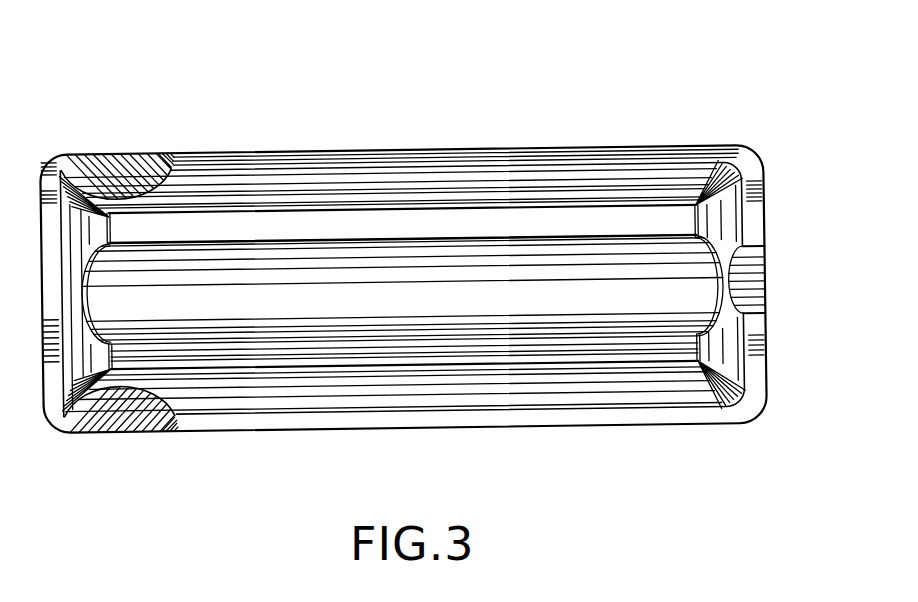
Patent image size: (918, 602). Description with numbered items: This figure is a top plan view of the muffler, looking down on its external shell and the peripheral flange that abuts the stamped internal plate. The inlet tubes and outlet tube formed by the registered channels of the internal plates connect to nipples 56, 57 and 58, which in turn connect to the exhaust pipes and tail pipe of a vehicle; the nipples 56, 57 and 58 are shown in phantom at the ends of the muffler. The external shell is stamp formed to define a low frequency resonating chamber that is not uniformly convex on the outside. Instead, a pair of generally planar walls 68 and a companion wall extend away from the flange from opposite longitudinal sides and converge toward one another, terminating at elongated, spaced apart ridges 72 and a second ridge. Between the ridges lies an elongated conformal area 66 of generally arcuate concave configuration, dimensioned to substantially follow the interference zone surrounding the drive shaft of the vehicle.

The nipple 56 is at (60, 432).
The nipple 57 is at (60, 150).
The nipple 58 is at (765, 250).
The conformal area 66 is at (290, 307).
The planar wall 68 is at (377, 382).
The ridge 72 is at (450, 350).